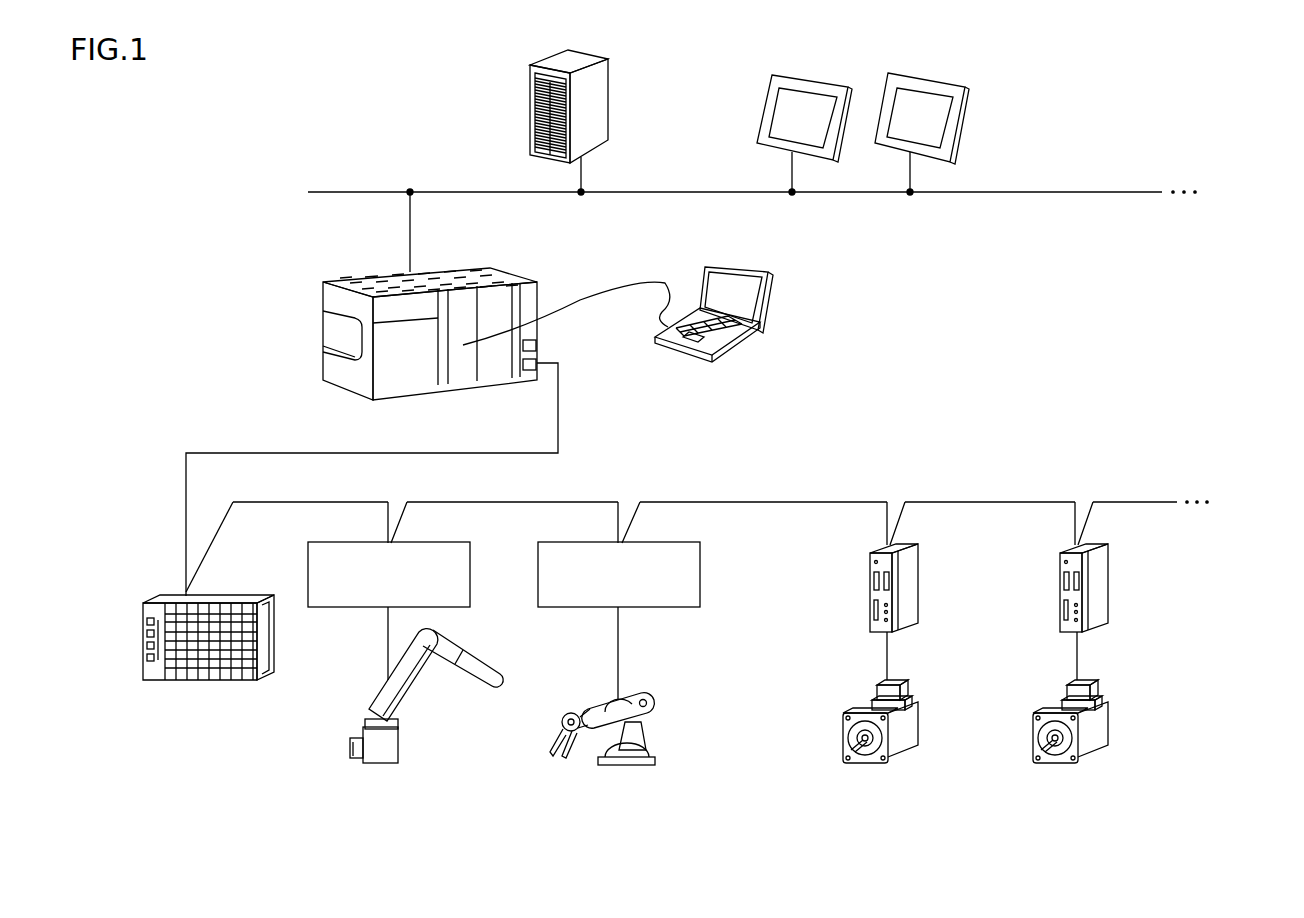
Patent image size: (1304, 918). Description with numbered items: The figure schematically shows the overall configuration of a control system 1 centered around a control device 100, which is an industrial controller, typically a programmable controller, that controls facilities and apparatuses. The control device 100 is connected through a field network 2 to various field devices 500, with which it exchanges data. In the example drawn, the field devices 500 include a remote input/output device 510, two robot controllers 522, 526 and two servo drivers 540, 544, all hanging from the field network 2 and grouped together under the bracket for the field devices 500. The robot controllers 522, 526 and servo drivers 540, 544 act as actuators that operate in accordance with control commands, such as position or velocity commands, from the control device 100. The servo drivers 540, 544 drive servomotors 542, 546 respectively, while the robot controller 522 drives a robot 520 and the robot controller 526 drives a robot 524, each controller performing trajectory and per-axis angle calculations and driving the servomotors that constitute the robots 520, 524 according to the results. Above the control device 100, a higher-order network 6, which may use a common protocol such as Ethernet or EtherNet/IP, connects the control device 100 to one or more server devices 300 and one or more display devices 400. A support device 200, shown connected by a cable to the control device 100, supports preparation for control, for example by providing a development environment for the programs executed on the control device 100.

The control system 1 is at (1167, 64).
The field network 2 is at (497, 455).
The higher-order network 6 is at (1112, 191).
The control device 100 is at (560, 268).
The support device 200 is at (770, 288).
The server device 300 is at (610, 90).
The display device 400 is at (820, 78).
The field devices 500 is at (1247, 493).
The remote input/output (I/O) device 510 is at (203, 683).
The robot 520 is at (383, 765).
The robot controller 522 is at (424, 540).
The robot 524 is at (628, 768).
The robot controller 526 is at (655, 540).
The servo driver 540 is at (868, 605).
The servomotor 542 is at (920, 725).
The servo driver 544 is at (1058, 603).
The servomotor 546 is at (1110, 722).